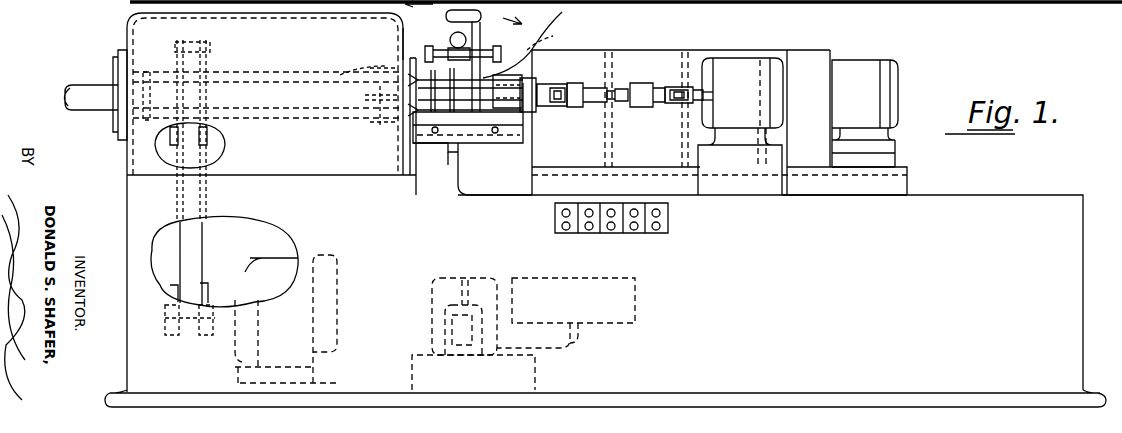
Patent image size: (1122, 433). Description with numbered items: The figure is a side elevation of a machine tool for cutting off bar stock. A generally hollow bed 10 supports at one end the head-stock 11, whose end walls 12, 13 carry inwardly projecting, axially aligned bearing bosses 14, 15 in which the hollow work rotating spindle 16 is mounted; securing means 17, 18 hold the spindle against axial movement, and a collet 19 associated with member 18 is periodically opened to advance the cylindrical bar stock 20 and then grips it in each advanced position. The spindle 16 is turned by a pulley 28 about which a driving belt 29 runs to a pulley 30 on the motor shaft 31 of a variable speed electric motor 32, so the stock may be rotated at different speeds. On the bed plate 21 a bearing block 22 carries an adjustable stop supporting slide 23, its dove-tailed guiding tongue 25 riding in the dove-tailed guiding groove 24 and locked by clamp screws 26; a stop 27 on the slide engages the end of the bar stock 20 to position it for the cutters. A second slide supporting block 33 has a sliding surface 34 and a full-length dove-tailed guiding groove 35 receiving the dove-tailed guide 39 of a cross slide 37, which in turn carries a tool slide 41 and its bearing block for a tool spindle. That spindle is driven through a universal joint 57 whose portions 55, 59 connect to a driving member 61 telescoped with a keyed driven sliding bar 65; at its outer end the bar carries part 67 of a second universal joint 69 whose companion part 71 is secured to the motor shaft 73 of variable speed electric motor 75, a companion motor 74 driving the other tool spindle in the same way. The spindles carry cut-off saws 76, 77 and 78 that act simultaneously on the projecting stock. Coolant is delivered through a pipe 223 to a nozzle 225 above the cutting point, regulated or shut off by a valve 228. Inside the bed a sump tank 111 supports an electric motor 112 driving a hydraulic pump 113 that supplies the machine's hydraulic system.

The bed 10 is at (992, 7).
The head-stock 11 is at (362, 176).
The end wall 12 is at (125, 35).
The end wall 13 is at (405, 33).
The bearing boss 14 is at (141, 62).
The bearing boss 15 is at (396, 60).
The work rotating spindle 16 is at (316, 48).
The securing means 17 is at (119, 140).
The securing member 18 is at (393, 62).
The collet 19 is at (352, 65).
The bar stock 20 is at (88, 92).
The bed plate 21 is at (1044, 6).
The bearing block 22 is at (836, 186).
The stop supporting slide 23 is at (815, 52).
The guiding groove 24 is at (910, 180).
The guiding tongue 25 is at (813, 183).
The clamp screws 26 is at (640, 52).
The stop 27 is at (547, 36).
The pulley 28 is at (206, 60).
The driving belt 29 is at (200, 162).
The pulley 30 is at (170, 298).
The motor shaft 31 is at (222, 283).
The electric motor 32 is at (248, 262).
The slide supporting block 33 is at (445, 152).
The sliding surface 34 is at (410, 158).
The guiding groove 35 is at (458, 160).
The cross slide 37 is at (476, 143).
The dove-tailed guide 39 is at (430, 148).
The tool slide 41 is at (532, 113).
The universal joint portion 55 is at (538, 88).
The universal joint 57 is at (583, 74).
The universal joint second portion 59 is at (574, 101).
The driving member 61 is at (612, 103).
The driven sliding bar 65 is at (623, 90).
The universal joint part 67 is at (648, 104).
The universal joint 69 is at (684, 78).
The universal joint second part 71 is at (695, 100).
The motor shaft 73 is at (700, 92).
The electric motor 74 is at (893, 85).
The electric motor 75 is at (783, 108).
The cut-off saw 76 is at (540, 30).
The cut-off saw 77 is at (405, 130).
The cut-off saw 78 is at (406, 96).
The sump tank 111 is at (535, 375).
The electric motor 112 is at (465, 280).
The hydraulic pump 113 is at (432, 333).
The pipe 223 is at (478, 26).
The nozzle 225 is at (432, 62).
The regulating valve 228 is at (481, 56).